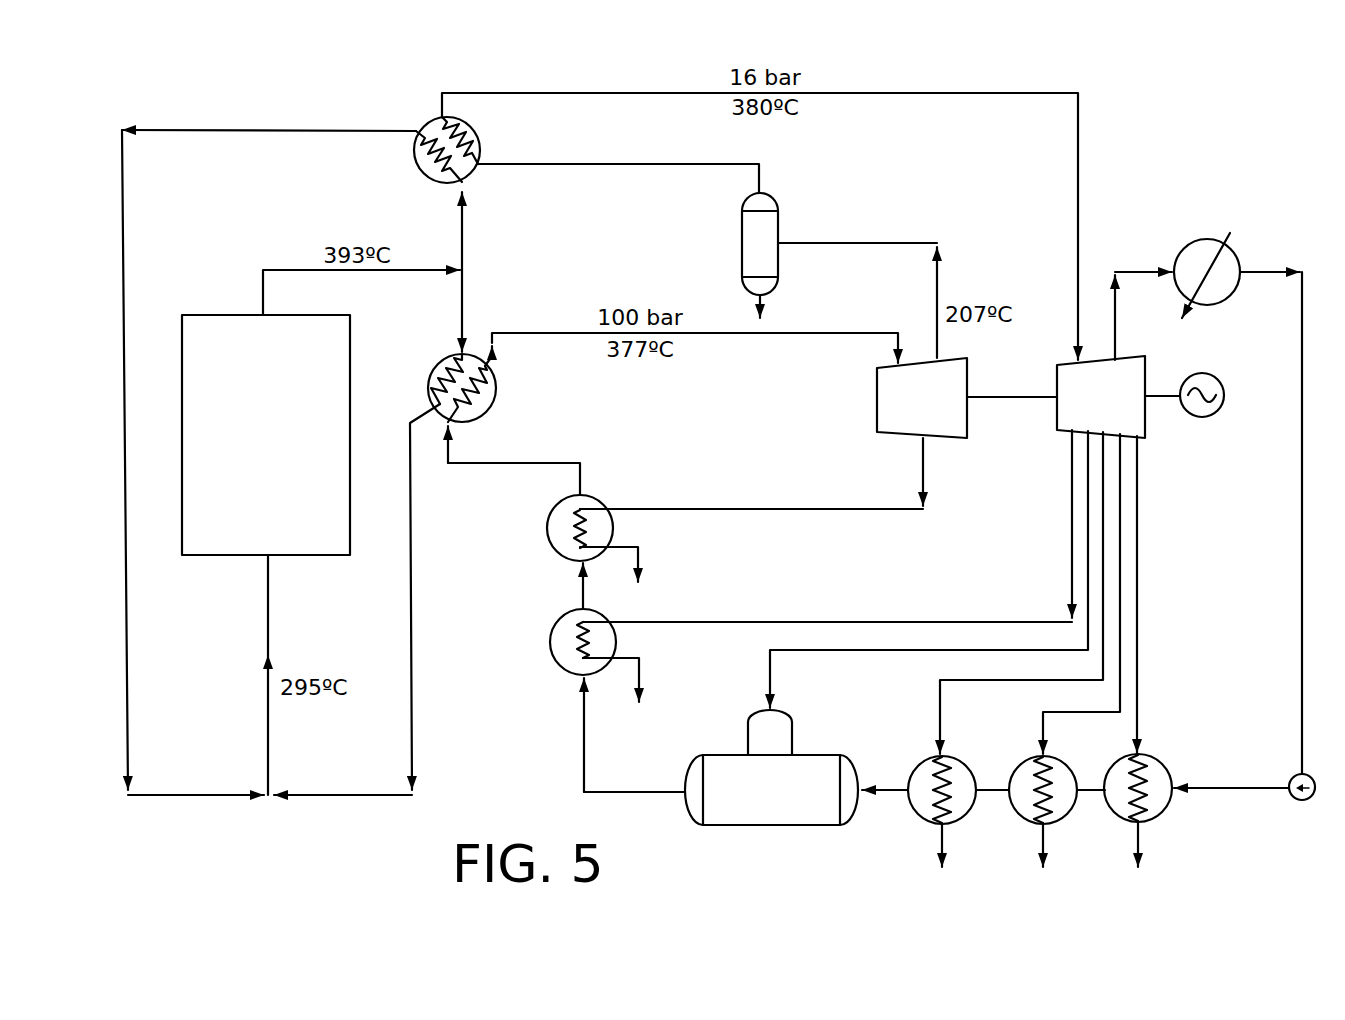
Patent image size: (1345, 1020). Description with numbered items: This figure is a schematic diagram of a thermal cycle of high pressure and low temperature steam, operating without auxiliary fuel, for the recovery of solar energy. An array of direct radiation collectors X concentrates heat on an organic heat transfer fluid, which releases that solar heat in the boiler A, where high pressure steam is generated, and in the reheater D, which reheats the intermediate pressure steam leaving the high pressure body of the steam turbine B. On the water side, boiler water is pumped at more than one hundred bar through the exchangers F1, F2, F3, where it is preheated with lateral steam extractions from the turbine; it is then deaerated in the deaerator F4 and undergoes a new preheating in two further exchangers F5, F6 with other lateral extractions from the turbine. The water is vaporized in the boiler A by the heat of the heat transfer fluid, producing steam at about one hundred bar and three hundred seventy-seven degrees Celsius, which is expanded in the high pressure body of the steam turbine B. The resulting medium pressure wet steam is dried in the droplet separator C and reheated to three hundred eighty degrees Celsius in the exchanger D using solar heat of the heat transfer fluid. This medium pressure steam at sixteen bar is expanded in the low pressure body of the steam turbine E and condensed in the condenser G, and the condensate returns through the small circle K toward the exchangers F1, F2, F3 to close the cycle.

The array of direct radiation collectors X is at (266, 435).
The reheater D is at (458, 150).
The boiler A is at (471, 388).
The droplet separator C is at (760, 244).
The high pressure body of the steam turbine B is at (922, 398).
The low pressure body of the steam turbine E is at (1101, 397).
The condenser G is at (1215, 275).
The pump K is at (1312, 788).
The exchanger F1 is at (1149, 796).
The exchanger F2 is at (1053, 797).
The exchanger F3 is at (952, 797).
The deaerator F4 is at (771, 767).
The exchanger F5 is at (568, 642).
The exchanger F6 is at (565, 528).